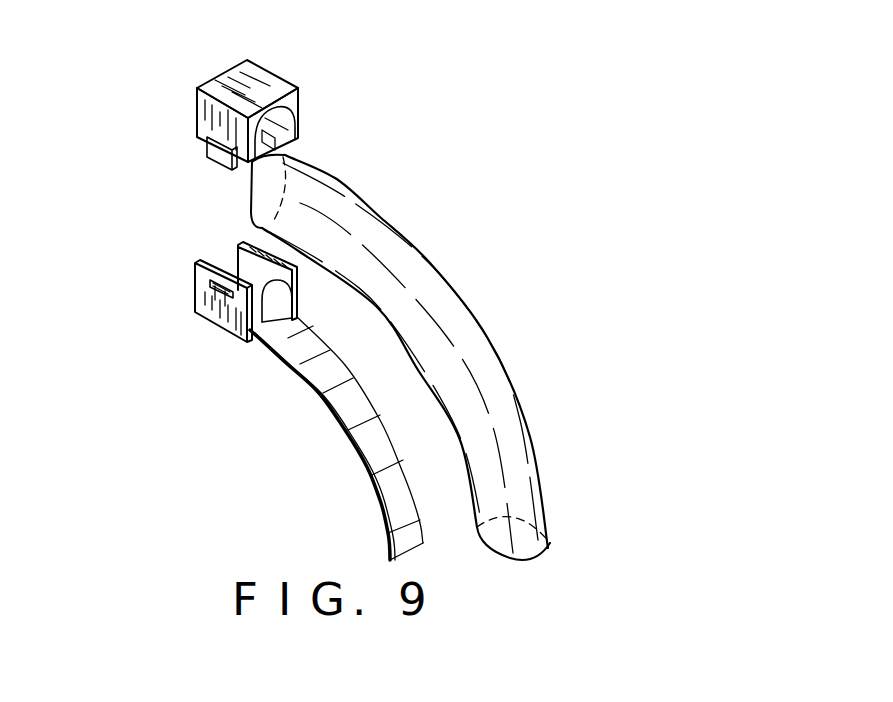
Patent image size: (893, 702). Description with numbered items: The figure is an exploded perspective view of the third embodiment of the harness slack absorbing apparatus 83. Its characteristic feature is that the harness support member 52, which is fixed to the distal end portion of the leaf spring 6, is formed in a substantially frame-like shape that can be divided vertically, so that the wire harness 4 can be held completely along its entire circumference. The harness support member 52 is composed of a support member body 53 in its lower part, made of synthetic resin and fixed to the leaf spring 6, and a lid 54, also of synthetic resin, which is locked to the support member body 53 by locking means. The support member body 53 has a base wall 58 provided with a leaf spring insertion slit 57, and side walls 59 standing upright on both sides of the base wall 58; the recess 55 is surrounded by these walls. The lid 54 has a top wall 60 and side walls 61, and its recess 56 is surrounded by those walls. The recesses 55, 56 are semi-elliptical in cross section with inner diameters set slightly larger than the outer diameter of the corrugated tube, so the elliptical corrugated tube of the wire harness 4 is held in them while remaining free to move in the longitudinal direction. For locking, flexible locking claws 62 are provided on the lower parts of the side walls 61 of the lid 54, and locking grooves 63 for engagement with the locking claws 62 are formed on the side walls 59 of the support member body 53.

The wire harness 4 is at (467, 323).
The leaf spring 6 is at (340, 418).
The harness support member 52 is at (110, 152).
The support member body 53 is at (190, 277).
The lid 54 is at (190, 145).
The recess 55 is at (264, 340).
The recess 56 is at (283, 127).
The leaf spring insertion slit 57 is at (296, 345).
The base wall 58 is at (222, 330).
The side walls 59 is at (195, 292).
The top wall 60 is at (257, 80).
The side walls 61 is at (208, 118).
The locking claws 62 is at (222, 158).
The locking grooves 63 is at (223, 300).
The harness slack absorbing apparatus 83 is at (246, 434).